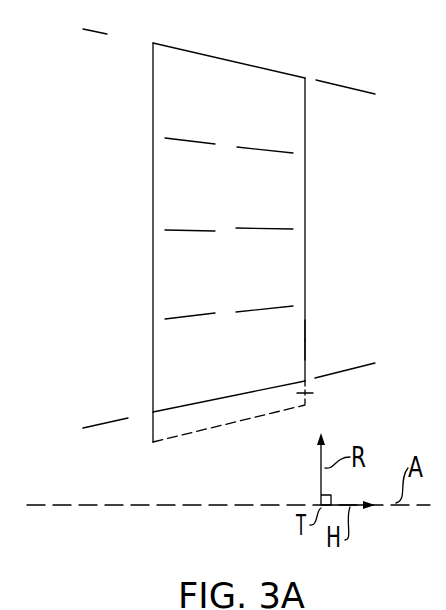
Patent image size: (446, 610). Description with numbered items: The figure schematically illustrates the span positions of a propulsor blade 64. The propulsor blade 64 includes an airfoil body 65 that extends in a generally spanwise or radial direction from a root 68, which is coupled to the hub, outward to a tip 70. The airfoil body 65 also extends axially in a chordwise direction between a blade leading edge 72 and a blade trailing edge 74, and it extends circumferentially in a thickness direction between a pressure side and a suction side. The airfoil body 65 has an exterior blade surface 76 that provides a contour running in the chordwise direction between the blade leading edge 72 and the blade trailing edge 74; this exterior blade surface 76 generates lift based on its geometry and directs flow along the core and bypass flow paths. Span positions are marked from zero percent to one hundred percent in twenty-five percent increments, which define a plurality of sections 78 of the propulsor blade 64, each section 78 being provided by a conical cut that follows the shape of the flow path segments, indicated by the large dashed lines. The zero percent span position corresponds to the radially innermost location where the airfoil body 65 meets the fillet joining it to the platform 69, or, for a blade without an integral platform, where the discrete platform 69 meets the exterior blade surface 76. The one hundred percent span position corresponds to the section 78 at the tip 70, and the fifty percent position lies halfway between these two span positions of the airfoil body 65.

The propulsor blade 64 is at (78, 108).
The airfoil body 65 is at (300, 328).
The root 68 is at (308, 393).
The platform 69 is at (282, 382).
The tip 70 is at (233, 60).
The blade leading edge 72 is at (153, 270).
The blade trailing edge 74 is at (306, 267).
The exterior blade surface 76 is at (300, 343).
The sections 78 is at (291, 133).